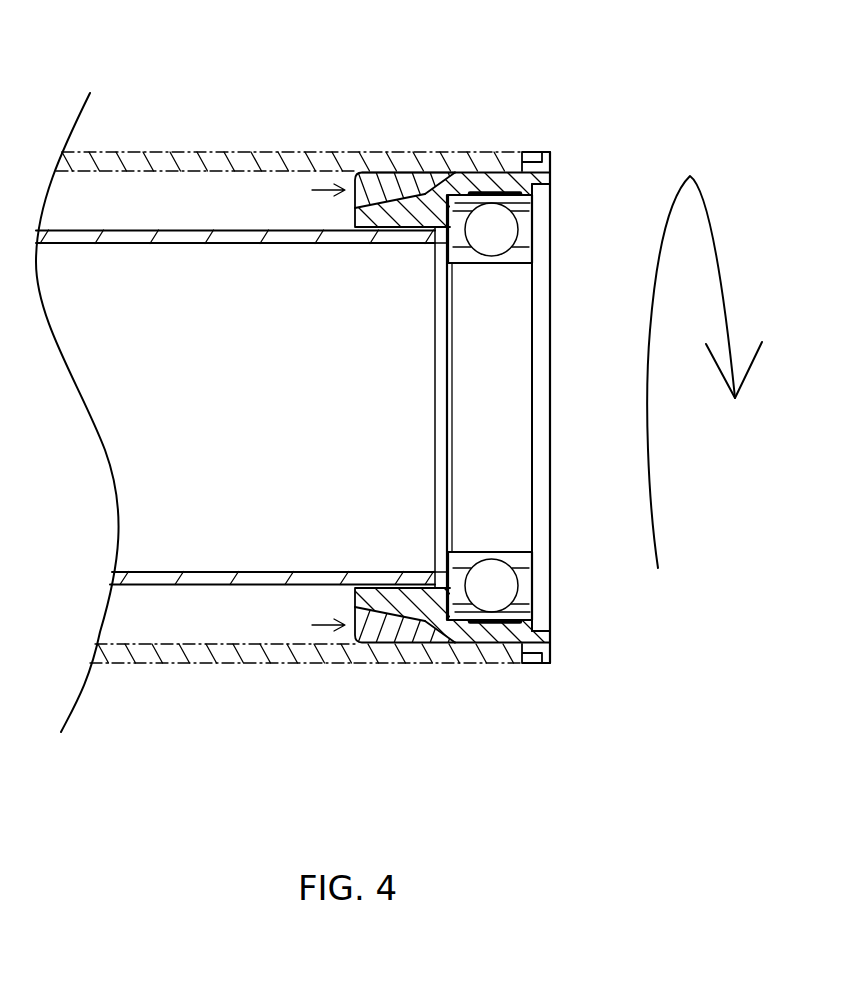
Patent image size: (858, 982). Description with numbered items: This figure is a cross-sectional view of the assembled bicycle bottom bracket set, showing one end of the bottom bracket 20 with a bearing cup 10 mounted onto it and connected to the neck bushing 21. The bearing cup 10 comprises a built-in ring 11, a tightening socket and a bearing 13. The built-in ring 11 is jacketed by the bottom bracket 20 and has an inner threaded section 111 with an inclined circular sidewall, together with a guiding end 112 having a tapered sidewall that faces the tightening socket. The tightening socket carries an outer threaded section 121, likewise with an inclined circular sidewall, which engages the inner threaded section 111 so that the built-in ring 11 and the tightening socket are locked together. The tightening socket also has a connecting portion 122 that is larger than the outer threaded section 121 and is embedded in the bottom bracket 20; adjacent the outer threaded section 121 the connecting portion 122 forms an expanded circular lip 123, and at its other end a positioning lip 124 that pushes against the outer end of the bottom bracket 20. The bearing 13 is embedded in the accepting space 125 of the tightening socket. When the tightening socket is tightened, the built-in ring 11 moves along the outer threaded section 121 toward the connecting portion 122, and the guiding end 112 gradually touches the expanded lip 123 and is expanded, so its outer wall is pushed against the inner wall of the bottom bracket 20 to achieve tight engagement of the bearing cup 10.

The bearing cup 10 is at (584, 602).
The built-in ring 11 is at (363, 172).
The inner threaded section 111 is at (385, 178).
The guiding end 112 is at (437, 178).
The outer threaded section 121 is at (422, 195).
The connecting portion 122 is at (500, 180).
The expanded circular lip 123 is at (453, 172).
The positioning lip 124 is at (547, 152).
The accepting space 125 is at (532, 203).
The bearing 13 is at (513, 255).
The bottom bracket 20 is at (224, 150).
The neck bushing 21 is at (157, 232).